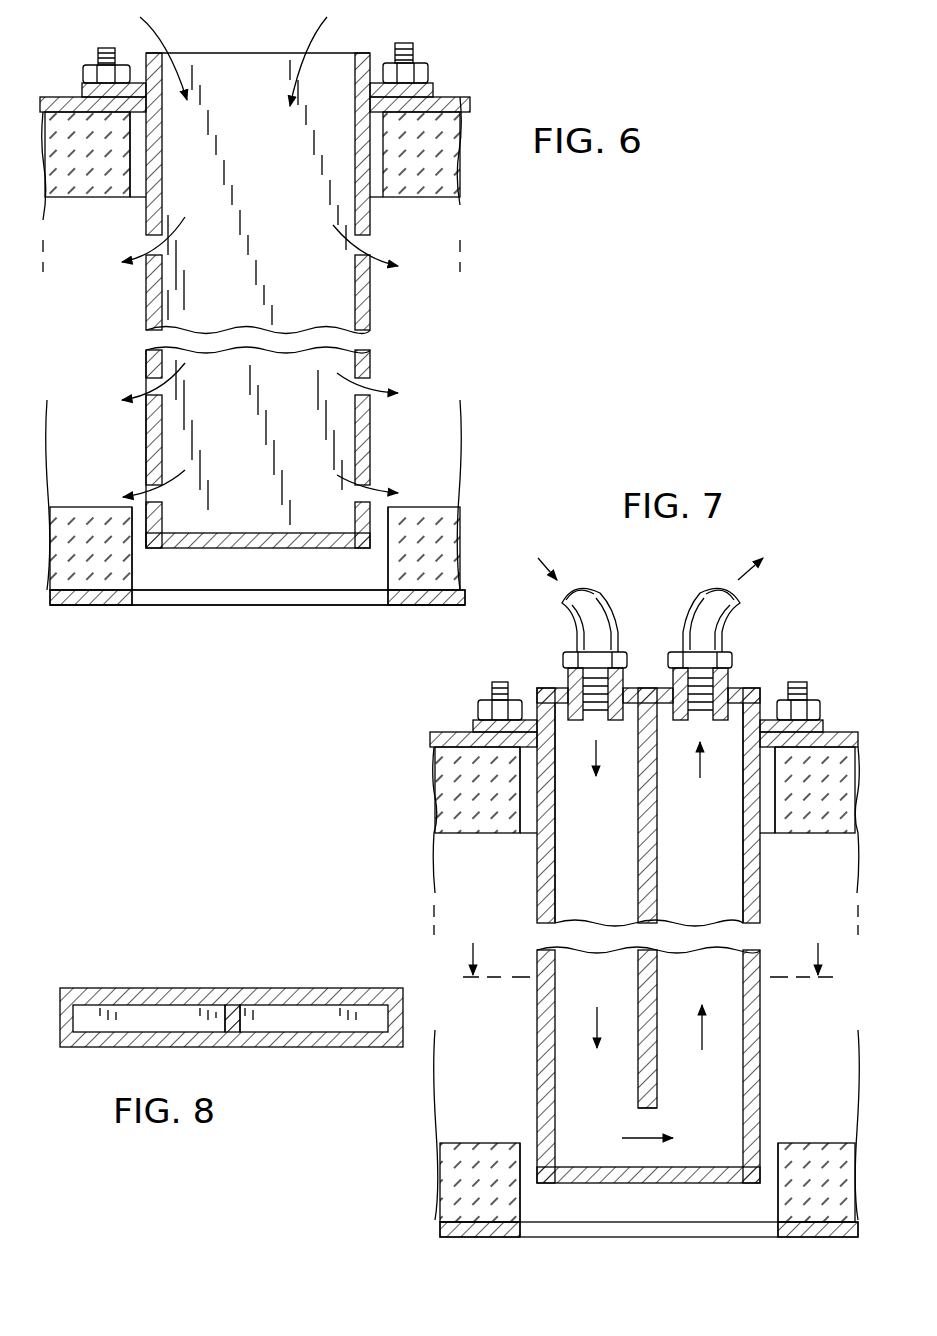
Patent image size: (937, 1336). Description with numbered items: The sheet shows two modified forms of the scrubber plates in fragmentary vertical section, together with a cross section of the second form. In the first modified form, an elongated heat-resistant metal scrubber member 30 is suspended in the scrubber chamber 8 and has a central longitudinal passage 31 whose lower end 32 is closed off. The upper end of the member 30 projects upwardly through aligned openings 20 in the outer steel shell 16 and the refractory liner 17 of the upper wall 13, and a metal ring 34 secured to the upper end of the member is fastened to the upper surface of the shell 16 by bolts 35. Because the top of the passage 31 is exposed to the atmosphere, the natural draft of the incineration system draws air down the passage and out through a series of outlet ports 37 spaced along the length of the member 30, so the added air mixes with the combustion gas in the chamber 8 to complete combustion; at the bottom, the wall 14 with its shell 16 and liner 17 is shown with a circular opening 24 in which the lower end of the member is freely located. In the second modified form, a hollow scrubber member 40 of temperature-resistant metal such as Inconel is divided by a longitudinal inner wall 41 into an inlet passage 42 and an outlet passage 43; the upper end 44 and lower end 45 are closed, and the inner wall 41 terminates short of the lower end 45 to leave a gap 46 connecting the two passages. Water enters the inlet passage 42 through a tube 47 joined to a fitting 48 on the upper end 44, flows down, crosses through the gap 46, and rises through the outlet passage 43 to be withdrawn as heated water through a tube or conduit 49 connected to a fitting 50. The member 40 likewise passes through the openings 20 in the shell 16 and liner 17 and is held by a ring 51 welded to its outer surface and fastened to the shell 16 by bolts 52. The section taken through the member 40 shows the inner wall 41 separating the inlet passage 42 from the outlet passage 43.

In FIG. 7, the scrubber chamber 8 is at (648, 977).
In FIG. 6, the upper wall 13 is at (466, 97).
In FIG. 7, the upper wall 13 is at (435, 732).
In FIG. 6, the wall 14 is at (80, 608).
In FIG. 6, the outer steel shell 16 is at (48, 97).
In FIG. 7, the outer steel shell 16 is at (845, 732).
In FIG. 6, the refractory liner 17 is at (52, 168).
In FIG. 7, the refractory liner 17 is at (845, 795).
In FIG. 6, the aligned openings 20 is at (136, 194).
In FIG. 7, the aligned openings 20 is at (775, 833).
In FIG. 6, the circular aligned openings 24 is at (143, 585).
In FIG. 6, the scrubber member 30 is at (373, 302).
In FIG. 6, the central longitudinal passage 31 is at (156, 309).
In FIG. 6, the lower end of passage 32 is at (268, 545).
In FIG. 6, the metal ring 34 is at (425, 85).
In FIG. 6, the bolts 35 is at (102, 55).
In FIG. 6, the outlet ports 37 is at (146, 246).
In FIG. 7, the hollow scrubber member 40 is at (536, 1077).
In FIG. 8, the hollow scrubber member 40 is at (325, 983).
In FIG. 7, the longitudinal inner wall 41 is at (650, 990).
In FIG. 8, the longitudinal inner wall 41 is at (238, 1024).
In FIG. 7, the inlet passage 42 is at (541, 881).
In FIG. 8, the inlet passage 42 is at (130, 999).
In FIG. 7, the outlet passage 43 is at (750, 888).
In FIG. 8, the outlet passage 43 is at (358, 999).
In FIG. 7, the upper end 44 is at (650, 688).
In FIG. 7, the lower end 45 is at (639, 1182).
In FIG. 7, the gap 46 is at (640, 1115).
In FIG. 7, the tube 47 is at (600, 590).
In FIG. 7, the fitting 48 is at (568, 667).
In FIG. 7, the tube or conduit 49 is at (740, 608).
In FIG. 7, the fitting 50 is at (732, 667).
In FIG. 7, the ring 51 is at (820, 720).
In FIG. 7, the bolts 52 is at (490, 688).